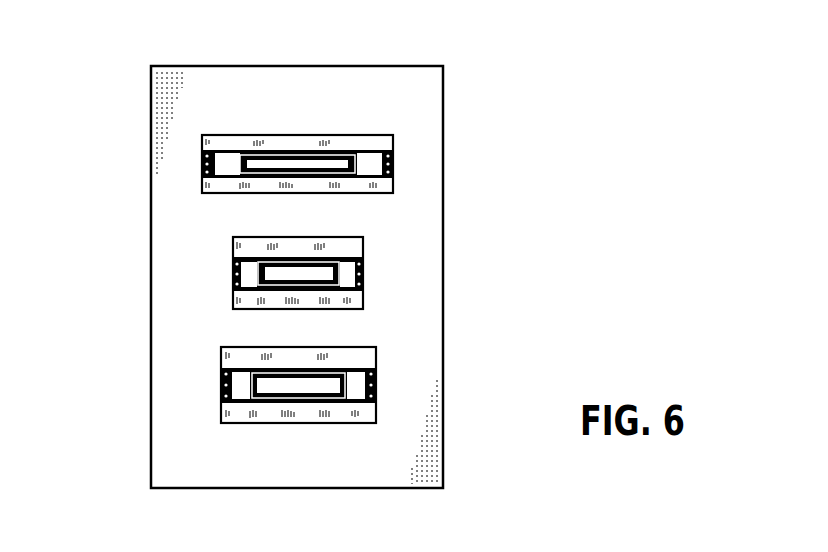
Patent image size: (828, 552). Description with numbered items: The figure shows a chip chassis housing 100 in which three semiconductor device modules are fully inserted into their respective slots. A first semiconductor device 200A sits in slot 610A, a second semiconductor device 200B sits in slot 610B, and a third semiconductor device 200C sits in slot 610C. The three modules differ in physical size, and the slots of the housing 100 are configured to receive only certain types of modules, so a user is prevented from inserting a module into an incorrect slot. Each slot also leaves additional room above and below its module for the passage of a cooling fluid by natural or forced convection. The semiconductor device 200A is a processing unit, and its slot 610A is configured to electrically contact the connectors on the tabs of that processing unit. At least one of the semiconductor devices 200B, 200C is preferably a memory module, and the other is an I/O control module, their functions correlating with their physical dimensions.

The housing 100 is at (477, 145).
The semiconductor device 200A is at (283, 188).
The semiconductor device 200B is at (284, 297).
The semiconductor device 200C is at (284, 412).
The slot 610A is at (387, 147).
The slot 610B is at (255, 298).
The slot 610C is at (365, 356).